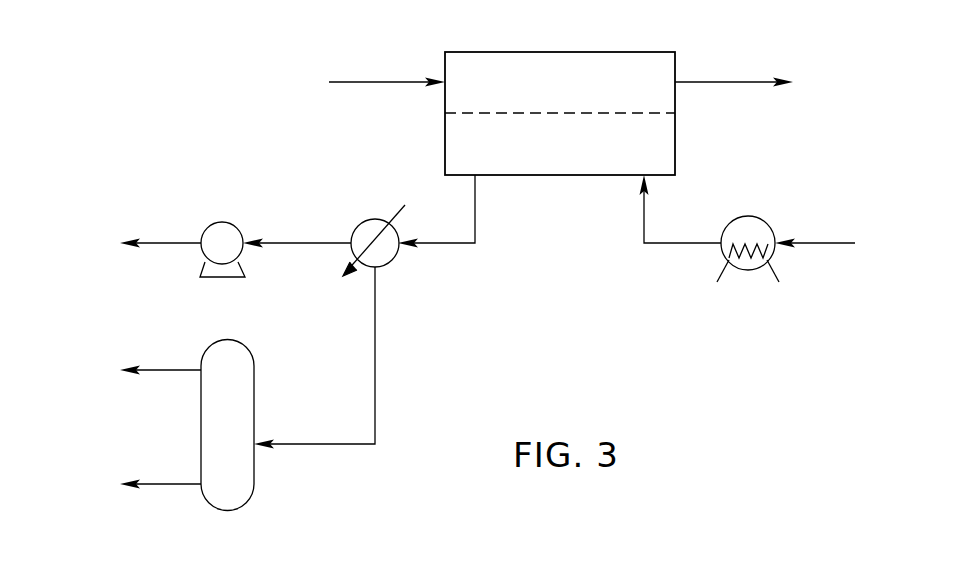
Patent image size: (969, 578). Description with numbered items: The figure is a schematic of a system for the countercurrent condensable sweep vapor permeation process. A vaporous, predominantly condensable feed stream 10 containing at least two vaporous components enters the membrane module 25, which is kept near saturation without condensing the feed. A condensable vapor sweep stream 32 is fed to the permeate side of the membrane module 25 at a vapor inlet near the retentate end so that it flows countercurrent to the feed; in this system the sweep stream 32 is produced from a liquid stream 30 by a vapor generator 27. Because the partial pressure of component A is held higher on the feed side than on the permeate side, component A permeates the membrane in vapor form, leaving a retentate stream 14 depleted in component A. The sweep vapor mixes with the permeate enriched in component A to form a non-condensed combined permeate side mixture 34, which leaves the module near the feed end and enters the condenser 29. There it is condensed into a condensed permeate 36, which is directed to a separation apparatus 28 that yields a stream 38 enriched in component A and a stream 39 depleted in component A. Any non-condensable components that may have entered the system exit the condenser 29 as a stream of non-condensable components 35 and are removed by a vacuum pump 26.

The feed stream 10 is at (387, 69).
The retentate stream 14 is at (734, 69).
The membrane module 25 is at (565, 52).
The vacuum pump 26 is at (222, 222).
The vapor generator 27 is at (750, 217).
The separation apparatus 28 is at (228, 340).
The condenser 29 is at (392, 262).
The liquid stream 30 is at (815, 229).
The condensable vapor sweep stream 32 is at (681, 209).
The combined permeate side mixture 34 is at (436, 211).
The stream of non-condensable components 35 is at (235, 229).
The condensed permeate 36 is at (314, 358).
The stream enriched in component A 38 is at (110, 359).
The stream depleted in component A 39 is at (110, 473).